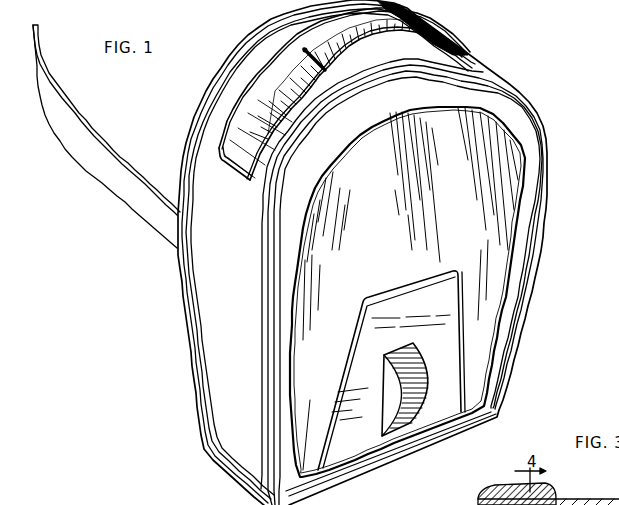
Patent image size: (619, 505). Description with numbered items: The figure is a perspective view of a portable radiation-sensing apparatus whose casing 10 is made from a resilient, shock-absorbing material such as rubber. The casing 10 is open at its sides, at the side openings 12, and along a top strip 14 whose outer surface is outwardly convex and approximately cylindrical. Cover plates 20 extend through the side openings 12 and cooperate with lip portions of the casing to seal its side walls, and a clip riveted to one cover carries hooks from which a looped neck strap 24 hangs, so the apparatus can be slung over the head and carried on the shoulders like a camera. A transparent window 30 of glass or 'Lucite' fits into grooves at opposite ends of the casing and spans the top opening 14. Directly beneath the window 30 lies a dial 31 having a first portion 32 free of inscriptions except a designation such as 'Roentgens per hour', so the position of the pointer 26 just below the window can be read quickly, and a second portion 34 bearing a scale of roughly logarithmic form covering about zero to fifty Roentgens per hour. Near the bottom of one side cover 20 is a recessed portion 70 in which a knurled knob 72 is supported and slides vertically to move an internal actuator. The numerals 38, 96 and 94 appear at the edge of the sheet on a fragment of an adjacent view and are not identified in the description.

The casing 10 is at (191, 384).
The side openings 12 is at (521, 197).
The top strip opening 14 is at (282, 70).
The cover plates 20 is at (503, 271).
The neck strap 24 is at (105, 170).
The pointer 26 is at (309, 50).
The transparent window 30 is at (240, 140).
The dial 31 is at (433, 31).
The first portion of dial 32 is at (266, 96).
The second portion of dial 34 is at (238, 125).
The recessed portion 70 is at (452, 355).
The knob 72 is at (403, 425).
The cap 38 is at (560, 492).
The plate 96 is at (579, 499).
The base layer 94 is at (612, 499).